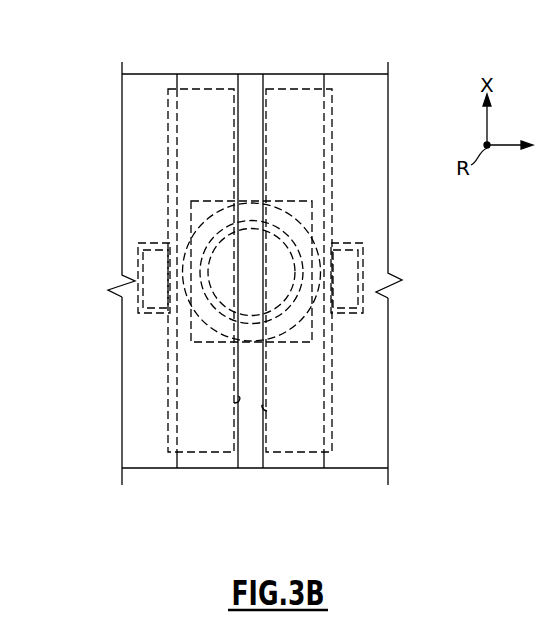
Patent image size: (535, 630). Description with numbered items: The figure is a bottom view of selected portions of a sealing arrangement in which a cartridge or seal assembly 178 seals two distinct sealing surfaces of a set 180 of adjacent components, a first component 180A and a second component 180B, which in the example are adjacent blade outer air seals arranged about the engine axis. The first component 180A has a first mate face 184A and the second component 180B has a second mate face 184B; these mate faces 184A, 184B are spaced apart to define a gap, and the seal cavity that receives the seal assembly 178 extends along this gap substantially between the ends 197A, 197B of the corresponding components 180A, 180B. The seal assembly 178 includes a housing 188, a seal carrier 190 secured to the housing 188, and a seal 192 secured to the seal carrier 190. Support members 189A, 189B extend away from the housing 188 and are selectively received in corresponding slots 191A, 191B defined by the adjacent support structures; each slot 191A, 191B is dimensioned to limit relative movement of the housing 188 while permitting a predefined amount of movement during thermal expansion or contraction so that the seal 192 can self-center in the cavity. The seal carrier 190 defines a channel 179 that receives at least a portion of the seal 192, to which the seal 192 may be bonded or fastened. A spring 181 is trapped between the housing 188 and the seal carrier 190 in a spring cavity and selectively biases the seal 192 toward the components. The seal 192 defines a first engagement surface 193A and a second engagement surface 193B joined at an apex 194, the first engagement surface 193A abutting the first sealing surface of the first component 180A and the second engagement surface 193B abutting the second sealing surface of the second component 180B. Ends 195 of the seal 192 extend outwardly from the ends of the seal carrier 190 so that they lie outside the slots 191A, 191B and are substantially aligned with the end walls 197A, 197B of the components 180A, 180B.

The set of adjacent components 180 is at (95, 88).
The seal assembly 178 is at (141, 152).
The channel 179 is at (322, 110).
The seal carrier 190 is at (336, 150).
The housing 188 is at (312, 220).
The spring 181 is at (213, 293).
The first mate face 184A is at (234, 403).
The second mate face 184B is at (267, 411).
The first component 180A is at (135, 441).
The second component 180B is at (375, 447).
The first support member 189A is at (144, 250).
The second support member 189B is at (352, 250).
The first slot 191A is at (138, 296).
The second slot 191B is at (362, 298).
The seal 192 is at (198, 78).
The first engagement surface 193A is at (218, 89).
The second engagement surface 193B is at (296, 82).
The apex 194 is at (258, 78).
The ends of the seal 195 is at (280, 74).
The first end wall 197A is at (143, 74).
The second end wall 197B is at (383, 74).